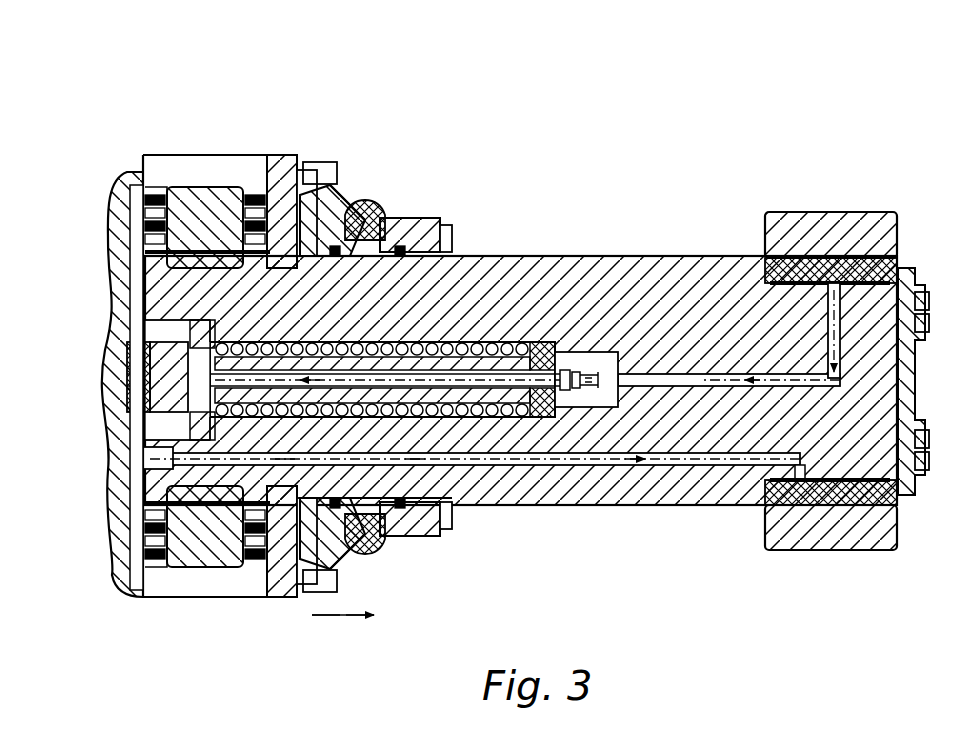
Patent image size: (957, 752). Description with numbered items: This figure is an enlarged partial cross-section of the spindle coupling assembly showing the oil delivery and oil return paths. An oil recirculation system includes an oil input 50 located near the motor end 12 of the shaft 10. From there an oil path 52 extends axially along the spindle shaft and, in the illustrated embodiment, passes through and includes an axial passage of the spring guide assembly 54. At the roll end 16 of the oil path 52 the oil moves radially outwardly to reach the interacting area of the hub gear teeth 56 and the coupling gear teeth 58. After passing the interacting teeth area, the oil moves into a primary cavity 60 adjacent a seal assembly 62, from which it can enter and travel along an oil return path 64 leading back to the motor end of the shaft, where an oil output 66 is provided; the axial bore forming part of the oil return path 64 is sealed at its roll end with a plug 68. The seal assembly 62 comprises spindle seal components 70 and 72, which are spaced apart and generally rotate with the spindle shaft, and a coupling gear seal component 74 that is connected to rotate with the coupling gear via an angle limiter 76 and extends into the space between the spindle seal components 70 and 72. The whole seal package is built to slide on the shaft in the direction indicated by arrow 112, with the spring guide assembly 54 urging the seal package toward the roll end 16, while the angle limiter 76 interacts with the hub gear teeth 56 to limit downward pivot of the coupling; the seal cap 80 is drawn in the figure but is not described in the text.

The shaft 10 is at (603, 272).
The motor end 12 is at (920, 130).
The roll end 16 is at (116, 120).
The oil input 50 is at (828, 275).
The oil path 52 is at (702, 372).
The spring guide assembly 54 is at (505, 346).
The hub gear teeth 56 is at (235, 195).
The coupling gear teeth 58 is at (168, 188).
The primary cavity 60 is at (305, 248).
The seal assembly 62 is at (405, 125).
The oil return path 64 is at (143, 486).
The oil output 66 is at (786, 466).
The plug 68 is at (112, 500).
The spindle seal component 70 is at (307, 203).
The spindle seal component 72 is at (387, 222).
The coupling gear seal component 74 is at (356, 205).
The angle limiter 76 is at (290, 210).
The seal cap 80 is at (365, 200).
The arrow 112 is at (343, 634).